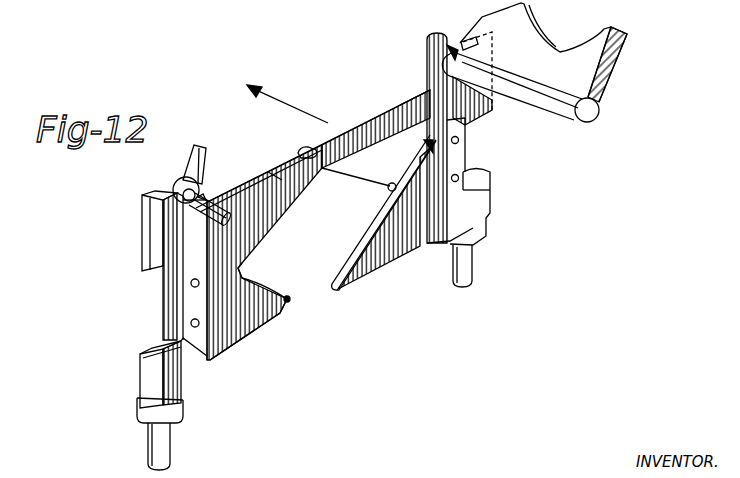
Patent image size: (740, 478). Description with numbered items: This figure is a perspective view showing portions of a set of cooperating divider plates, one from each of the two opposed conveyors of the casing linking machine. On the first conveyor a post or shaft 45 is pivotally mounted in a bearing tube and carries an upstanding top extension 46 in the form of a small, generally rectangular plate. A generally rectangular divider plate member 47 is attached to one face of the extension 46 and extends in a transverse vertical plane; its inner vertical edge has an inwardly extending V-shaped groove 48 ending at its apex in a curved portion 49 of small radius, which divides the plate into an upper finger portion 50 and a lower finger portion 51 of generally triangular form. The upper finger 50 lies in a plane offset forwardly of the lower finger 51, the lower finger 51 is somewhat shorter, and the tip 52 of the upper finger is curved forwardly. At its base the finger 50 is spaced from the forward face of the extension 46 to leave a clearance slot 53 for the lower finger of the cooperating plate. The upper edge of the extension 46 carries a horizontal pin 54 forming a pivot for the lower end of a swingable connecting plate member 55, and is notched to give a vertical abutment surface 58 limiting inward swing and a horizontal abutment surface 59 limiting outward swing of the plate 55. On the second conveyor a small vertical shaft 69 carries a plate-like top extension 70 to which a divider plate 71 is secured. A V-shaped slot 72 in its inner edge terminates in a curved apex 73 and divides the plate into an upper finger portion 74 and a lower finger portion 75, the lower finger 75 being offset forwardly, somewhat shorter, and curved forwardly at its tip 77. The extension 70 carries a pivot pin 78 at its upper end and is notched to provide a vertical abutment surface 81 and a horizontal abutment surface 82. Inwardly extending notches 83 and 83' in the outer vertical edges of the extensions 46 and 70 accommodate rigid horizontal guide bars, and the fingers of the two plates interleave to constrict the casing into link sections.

The post or shaft 45 is at (472, 268).
The top extension 46 is at (490, 193).
The divider plate member 47 is at (393, 113).
The V-shaped groove 48 is at (364, 226).
The curved portion 49 is at (388, 188).
The upper finger portion 50 is at (338, 172).
The lower finger portion 51 is at (342, 256).
The tip or outer end 52 is at (301, 148).
The clearance slot 53 is at (420, 100).
The pin 54 is at (519, 88).
The swingable connecting plate member 55 is at (600, 72).
The vertical abutment surface 58 is at (433, 35).
The horizontal abutment surface 59 is at (474, 27).
The vertical shaft 69 is at (170, 450).
The plate-like top extension 70 is at (193, 382).
The divider plate 71 is at (257, 175).
The V-shaped slot 72 is at (278, 222).
The curved apex 73 is at (245, 266).
The upper finger portion 74 is at (273, 178).
The lower finger portion 75 is at (254, 332).
The tip 77 is at (291, 300).
The pivot pin 78 is at (210, 200).
The vertical abutment edge or surface 81 is at (195, 165).
The horizontal abutment surface 82 is at (162, 196).
The notch 83 is at (164, 276).
The notch 83' is at (474, 150).